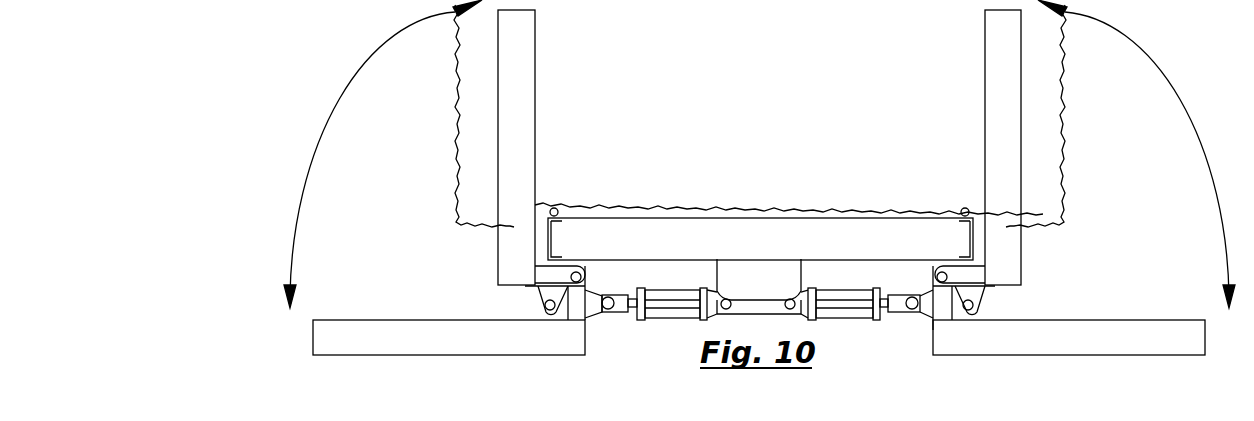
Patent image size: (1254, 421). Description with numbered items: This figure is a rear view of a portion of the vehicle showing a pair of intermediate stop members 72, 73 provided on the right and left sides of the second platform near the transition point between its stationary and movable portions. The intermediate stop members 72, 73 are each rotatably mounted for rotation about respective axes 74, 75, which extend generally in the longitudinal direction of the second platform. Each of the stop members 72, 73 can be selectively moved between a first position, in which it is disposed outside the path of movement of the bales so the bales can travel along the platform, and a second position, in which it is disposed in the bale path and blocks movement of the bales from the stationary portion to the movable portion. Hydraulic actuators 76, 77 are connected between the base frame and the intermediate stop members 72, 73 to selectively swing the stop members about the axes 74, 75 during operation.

The intermediate stop member 72 is at (525, 97).
The intermediate stop member 73 is at (995, 103).
The axis 74 is at (577, 272).
The axis 75 is at (943, 272).
The hydraulic actuator 76 is at (660, 302).
The hydraulic actuator 77 is at (858, 302).